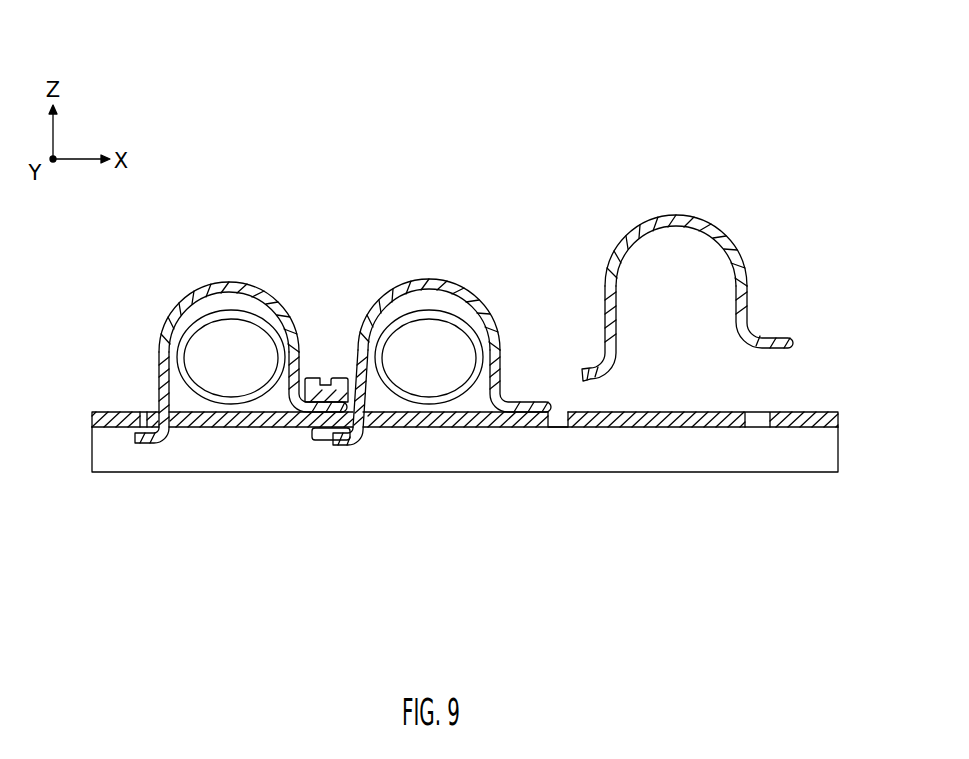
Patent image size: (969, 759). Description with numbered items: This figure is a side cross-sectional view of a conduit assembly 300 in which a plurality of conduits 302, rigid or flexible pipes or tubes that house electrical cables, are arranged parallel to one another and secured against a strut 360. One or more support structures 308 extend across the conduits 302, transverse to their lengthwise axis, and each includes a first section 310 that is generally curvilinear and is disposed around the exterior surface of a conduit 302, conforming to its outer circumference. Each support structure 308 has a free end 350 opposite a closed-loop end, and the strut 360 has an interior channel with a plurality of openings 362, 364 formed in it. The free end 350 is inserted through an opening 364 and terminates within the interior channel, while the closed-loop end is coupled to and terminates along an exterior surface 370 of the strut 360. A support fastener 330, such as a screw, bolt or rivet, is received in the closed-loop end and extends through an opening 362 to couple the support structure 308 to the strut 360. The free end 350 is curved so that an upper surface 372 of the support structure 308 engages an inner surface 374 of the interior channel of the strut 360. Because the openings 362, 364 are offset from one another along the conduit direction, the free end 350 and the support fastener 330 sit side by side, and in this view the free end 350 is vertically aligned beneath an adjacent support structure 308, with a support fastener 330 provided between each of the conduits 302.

The conduit assembly 300 is at (357, 60).
The conduits 302 is at (262, 320).
The support structures 308 is at (193, 268).
The first section 310 is at (243, 282).
The support fastener 330 is at (318, 378).
The free end 350 is at (150, 445).
The strut 360 is at (743, 484).
The openings 362 is at (823, 457).
The openings 364 is at (555, 437).
The exterior surface 370 is at (658, 410).
The upper surface 372 is at (142, 410).
The inner surface 374 is at (103, 428).